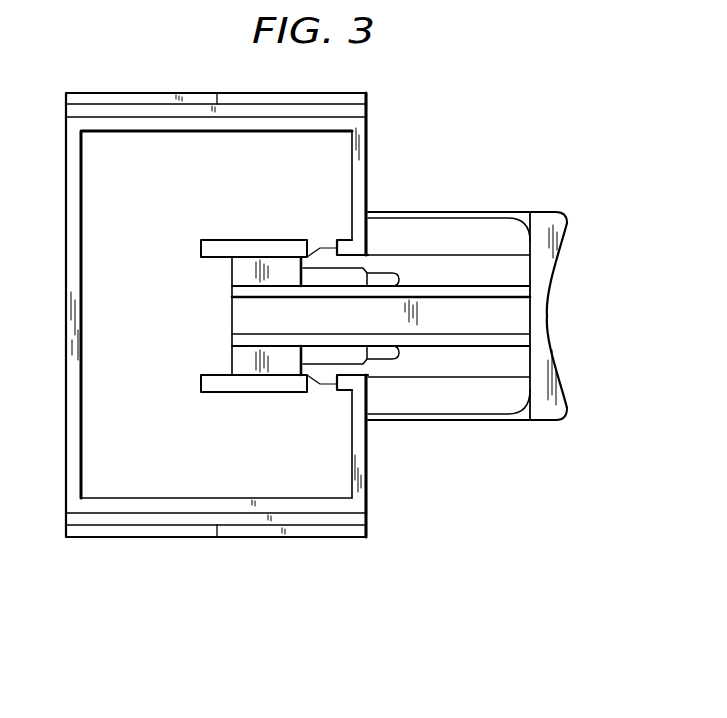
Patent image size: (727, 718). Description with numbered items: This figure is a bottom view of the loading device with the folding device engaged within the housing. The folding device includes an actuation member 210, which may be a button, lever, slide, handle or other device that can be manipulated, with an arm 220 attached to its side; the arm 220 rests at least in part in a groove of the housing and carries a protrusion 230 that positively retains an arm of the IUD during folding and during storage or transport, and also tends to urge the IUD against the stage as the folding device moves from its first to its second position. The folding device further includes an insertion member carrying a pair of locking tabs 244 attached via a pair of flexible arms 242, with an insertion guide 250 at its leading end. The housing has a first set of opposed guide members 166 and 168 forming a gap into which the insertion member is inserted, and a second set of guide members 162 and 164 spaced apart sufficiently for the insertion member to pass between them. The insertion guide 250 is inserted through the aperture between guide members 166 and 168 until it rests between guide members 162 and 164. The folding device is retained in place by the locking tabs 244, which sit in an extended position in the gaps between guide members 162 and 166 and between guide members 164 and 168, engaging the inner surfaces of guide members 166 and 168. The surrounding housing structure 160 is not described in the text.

The mounting frame 160 is at (335, 169).
The guide member 162 is at (257, 240).
The guide member 164 is at (258, 393).
The guide member 166 is at (357, 246).
The guide member 168 is at (358, 398).
The actuation member 210 is at (546, 311).
The arm 220 is at (488, 214).
The protrusion 230 is at (448, 418).
The flexible arm 242 is at (392, 376).
The locking tab 244 is at (322, 378).
The insertion guide 250 is at (242, 320).